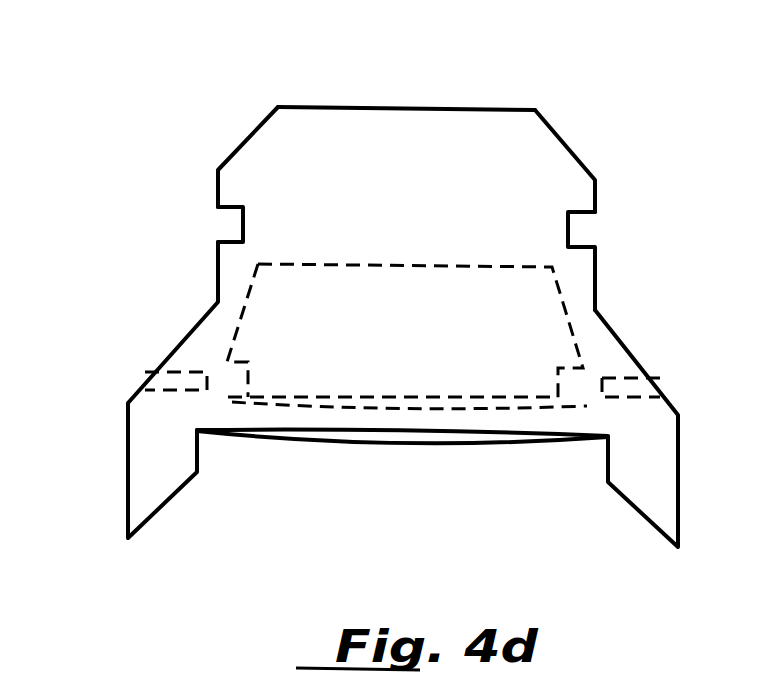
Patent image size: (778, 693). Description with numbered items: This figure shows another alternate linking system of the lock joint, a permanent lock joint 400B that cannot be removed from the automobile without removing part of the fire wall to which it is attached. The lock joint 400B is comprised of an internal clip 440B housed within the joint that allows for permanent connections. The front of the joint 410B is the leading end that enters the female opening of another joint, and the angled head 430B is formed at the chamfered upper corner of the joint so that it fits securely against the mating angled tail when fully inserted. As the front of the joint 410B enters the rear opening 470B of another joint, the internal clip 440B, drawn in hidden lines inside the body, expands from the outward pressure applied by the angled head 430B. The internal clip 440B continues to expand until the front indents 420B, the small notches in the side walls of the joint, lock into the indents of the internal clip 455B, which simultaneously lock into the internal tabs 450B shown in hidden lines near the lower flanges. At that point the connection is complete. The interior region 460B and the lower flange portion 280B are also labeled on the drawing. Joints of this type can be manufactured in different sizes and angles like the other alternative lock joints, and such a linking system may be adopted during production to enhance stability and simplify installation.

The lock joint 400B is at (185, 123).
The front of the joint 410B is at (410, 100).
The front indents 420B is at (214, 228).
The angled head 430B is at (574, 139).
The internal clip 440B is at (226, 331).
The internal tabs 450B is at (174, 397).
The indents of the internal clip 455B is at (582, 382).
The internal cavity 460B is at (426, 248).
The rear opening 470B is at (414, 482).
The mounting flange 280B is at (628, 520).